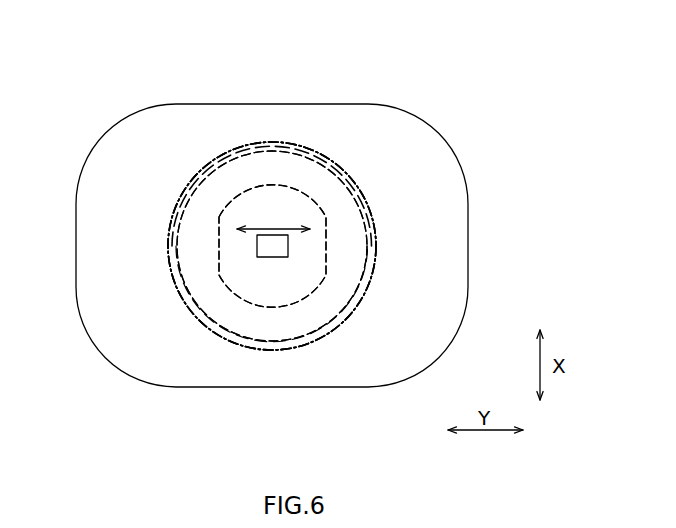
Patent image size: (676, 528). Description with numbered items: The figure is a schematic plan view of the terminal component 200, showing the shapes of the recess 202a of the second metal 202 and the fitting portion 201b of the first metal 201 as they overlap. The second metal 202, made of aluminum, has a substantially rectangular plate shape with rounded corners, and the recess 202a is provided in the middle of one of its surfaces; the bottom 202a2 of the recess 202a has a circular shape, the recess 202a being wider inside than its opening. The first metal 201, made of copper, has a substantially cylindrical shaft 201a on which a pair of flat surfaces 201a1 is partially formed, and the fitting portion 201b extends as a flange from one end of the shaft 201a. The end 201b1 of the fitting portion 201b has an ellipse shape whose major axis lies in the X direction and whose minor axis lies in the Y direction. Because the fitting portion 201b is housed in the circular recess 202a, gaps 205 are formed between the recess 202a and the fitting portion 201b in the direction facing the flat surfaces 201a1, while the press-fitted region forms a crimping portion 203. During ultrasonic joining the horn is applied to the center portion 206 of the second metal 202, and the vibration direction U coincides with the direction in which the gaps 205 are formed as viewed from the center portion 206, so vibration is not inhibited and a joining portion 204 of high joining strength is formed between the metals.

The terminal component 200 is at (276, 218).
The first metal 201 is at (200, 198).
The shaft 201a is at (276, 307).
The flat surfaces 201a1 is at (326, 250).
The fitting portion 201b is at (327, 199).
The end of the fitting portion 201b1 is at (357, 197).
The second metal 202 is at (222, 130).
The recess 202a is at (346, 317).
The bottom of the recess 202a2 is at (168, 241).
The crimping portion 203 is at (262, 133).
The joining portion 204 is at (262, 262).
The gap 205 is at (383, 278).
The center portion 206 is at (206, 298).